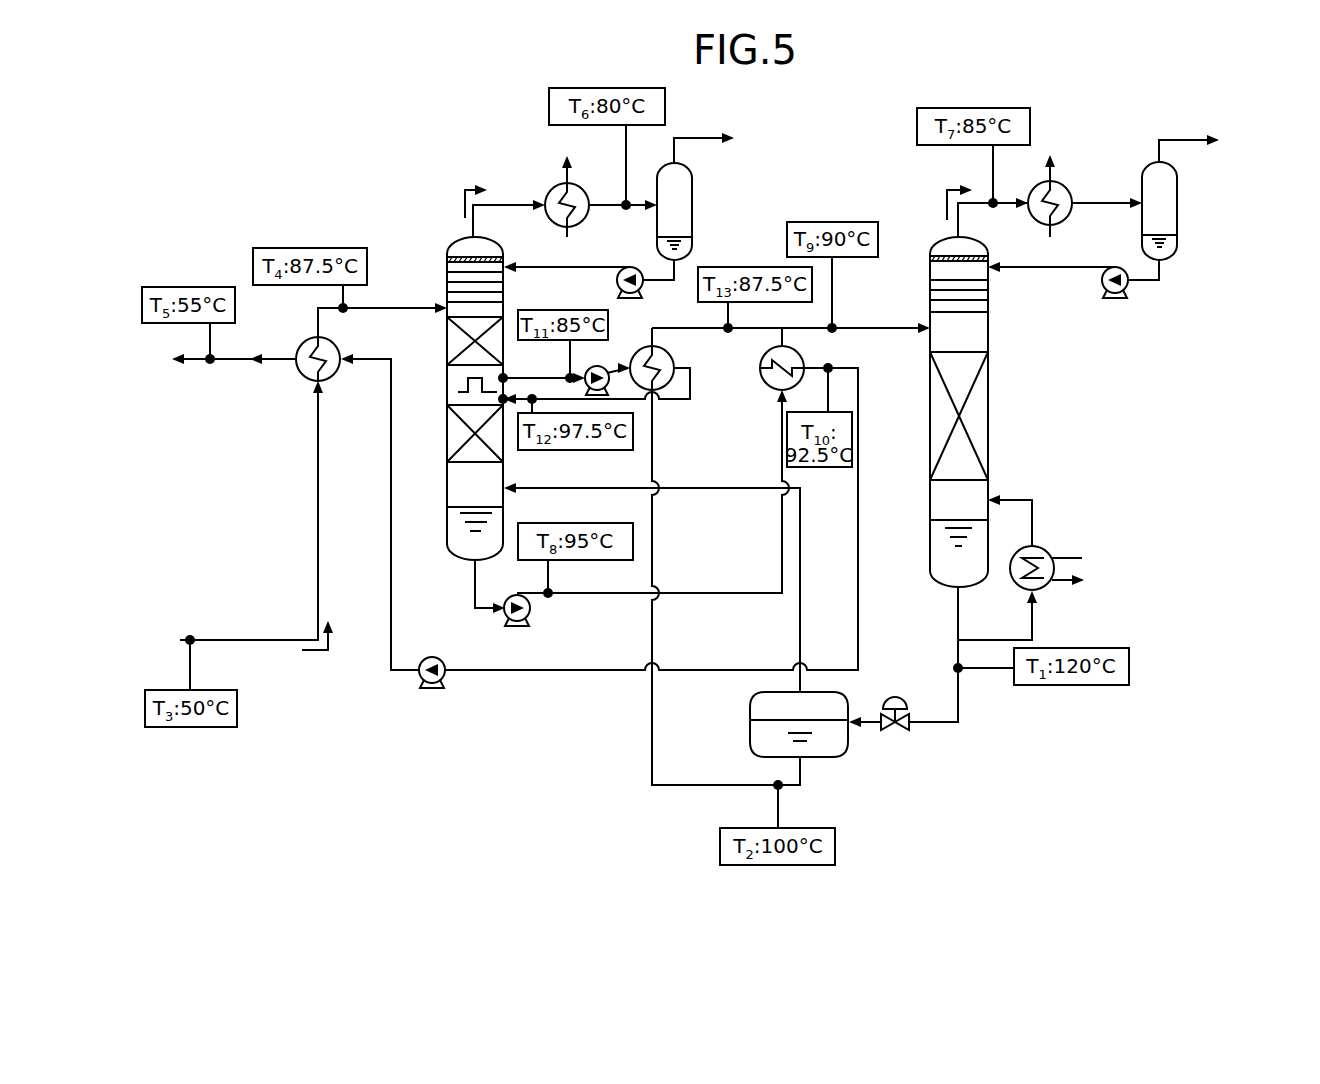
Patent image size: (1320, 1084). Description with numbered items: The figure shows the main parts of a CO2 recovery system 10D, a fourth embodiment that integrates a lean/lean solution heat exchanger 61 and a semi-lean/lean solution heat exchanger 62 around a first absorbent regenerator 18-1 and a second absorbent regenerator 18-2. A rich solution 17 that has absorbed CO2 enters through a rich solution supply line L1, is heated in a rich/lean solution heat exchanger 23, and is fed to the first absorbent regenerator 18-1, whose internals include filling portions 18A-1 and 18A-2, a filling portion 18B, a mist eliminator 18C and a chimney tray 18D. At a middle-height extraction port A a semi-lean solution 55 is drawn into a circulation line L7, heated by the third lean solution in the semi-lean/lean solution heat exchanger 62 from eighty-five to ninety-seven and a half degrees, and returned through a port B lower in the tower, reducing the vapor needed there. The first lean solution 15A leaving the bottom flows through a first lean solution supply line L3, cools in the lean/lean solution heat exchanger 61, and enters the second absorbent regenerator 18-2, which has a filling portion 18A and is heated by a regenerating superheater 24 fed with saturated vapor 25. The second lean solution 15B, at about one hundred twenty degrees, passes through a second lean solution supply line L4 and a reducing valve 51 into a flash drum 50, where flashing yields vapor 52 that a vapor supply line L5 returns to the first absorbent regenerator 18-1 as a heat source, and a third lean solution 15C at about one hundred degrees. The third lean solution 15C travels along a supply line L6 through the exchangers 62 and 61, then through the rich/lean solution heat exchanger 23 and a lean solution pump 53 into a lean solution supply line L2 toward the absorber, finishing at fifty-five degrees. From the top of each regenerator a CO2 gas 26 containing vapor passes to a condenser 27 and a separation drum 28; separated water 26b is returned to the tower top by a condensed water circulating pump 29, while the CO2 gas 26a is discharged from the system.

The CO2 recovery system 10D is at (412, 142).
The first lean solution 15A is at (588, 603).
The second lean solution 15B is at (931, 733).
The third lean solution 15C is at (287, 373).
The rich solution 17 is at (314, 655).
The first absorbent regenerator 18-1 is at (440, 246).
The second absorbent regenerator 18-2 is at (1000, 386).
The filling portion 18A is at (930, 425).
The filling portion 18A-1 is at (447, 345).
The filling portion 18A-2 is at (496, 448).
The filling portion 18B is at (447, 280).
The mist eliminator 18C is at (483, 258).
The chimney tray 18D is at (468, 383).
The rich/lean solution heat exchanger 23 is at (305, 343).
The regenerating superheater 24 is at (1040, 548).
The saturated vapor 25 is at (1078, 557).
The CO2 gas 26 is at (463, 208).
The CO2 gas 26a is at (705, 138).
The water 26b is at (689, 247).
The condenser 27 is at (578, 185).
The separation drum 28 is at (692, 204).
The condensed water circulating pump 29 is at (641, 289).
The flash drum 50 is at (823, 758).
The reducing valve 51 is at (893, 697).
The vapor 52 is at (730, 480).
The lean solution pump 53 is at (437, 656).
The semi-lean solution 55 is at (518, 368).
The lean/lean solution heat exchanger 61 is at (800, 355).
The semi-lean/lean solution heat exchanger 62 is at (670, 355).
The extraction port A is at (497, 378).
The return port B is at (503, 399).
The rich solution supply line L1 is at (318, 526).
The lean solution supply line L2 is at (391, 484).
The first lean solution supply line L3 is at (708, 596).
The second lean solution supply line L4 is at (960, 702).
The vapor supply line L5 is at (802, 604).
The supply line L6 is at (652, 742).
The circulation line L7 is at (612, 364).